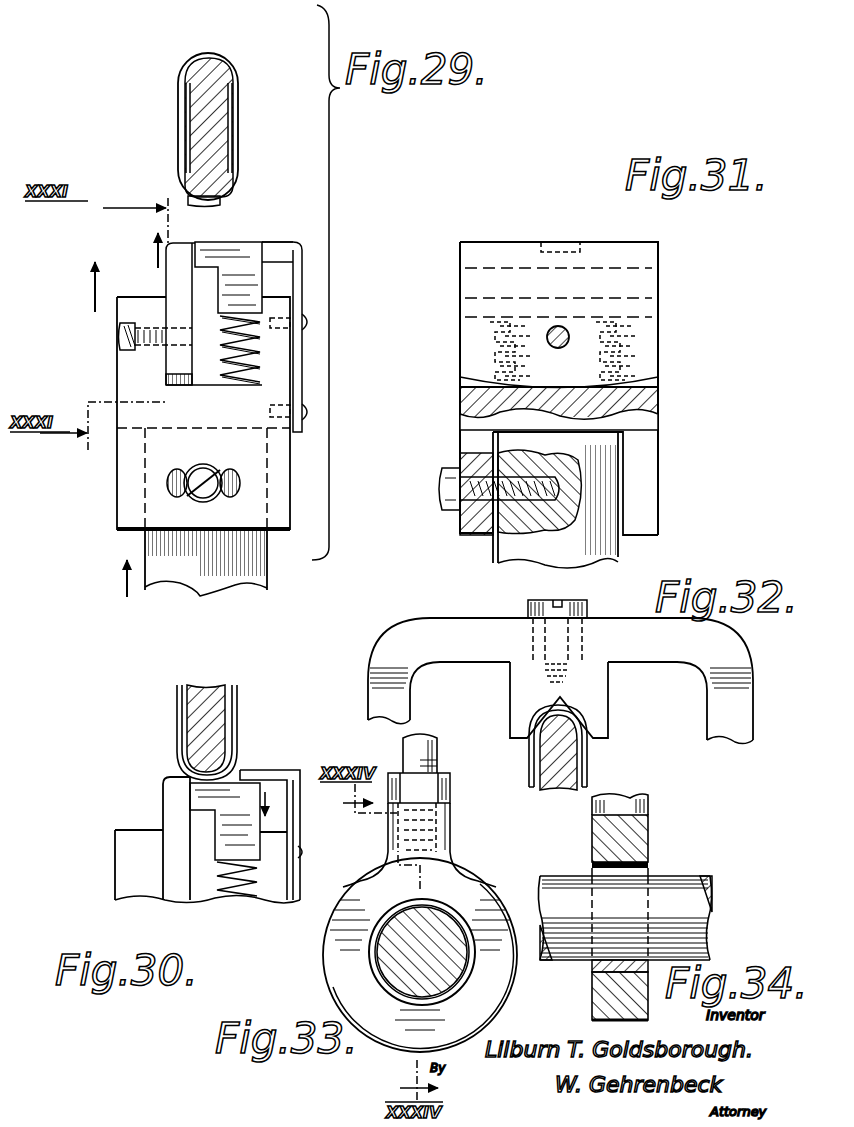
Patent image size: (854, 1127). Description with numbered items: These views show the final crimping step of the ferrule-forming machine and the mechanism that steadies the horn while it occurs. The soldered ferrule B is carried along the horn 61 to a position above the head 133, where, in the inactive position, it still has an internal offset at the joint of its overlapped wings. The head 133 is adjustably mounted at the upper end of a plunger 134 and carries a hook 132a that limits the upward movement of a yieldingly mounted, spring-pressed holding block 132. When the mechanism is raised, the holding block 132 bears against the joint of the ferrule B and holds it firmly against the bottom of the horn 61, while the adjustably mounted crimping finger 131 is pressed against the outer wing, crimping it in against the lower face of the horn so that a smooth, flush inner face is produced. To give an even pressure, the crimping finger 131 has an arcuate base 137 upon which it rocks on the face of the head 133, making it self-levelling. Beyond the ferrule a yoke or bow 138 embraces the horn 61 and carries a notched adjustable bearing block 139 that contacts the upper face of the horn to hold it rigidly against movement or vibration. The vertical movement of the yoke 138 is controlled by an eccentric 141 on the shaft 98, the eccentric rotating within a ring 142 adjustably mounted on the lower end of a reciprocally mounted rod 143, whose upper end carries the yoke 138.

In FIG. 29, the ferrule B is at (179, 125).
In FIG. 32, the ferrule B is at (528, 773).
In FIG. 30, the ferrule B is at (177, 732).
In FIG. 29, the horn 61 is at (205, 128).
In FIG. 32, the horn 61 is at (557, 762).
In FIG. 30, the horn 61 is at (205, 722).
In FIG. 33, the shaft 98 is at (396, 948).
In FIG. 34, the shaft 98 is at (625, 918).
In FIG. 29, the crimping finger 131 is at (165, 277).
In FIG. 31, the crimping finger 131 is at (559, 328).
In FIG. 30, the crimping finger 131 is at (162, 796).
In FIG. 29, the holding block 132 is at (250, 282).
In FIG. 30, the holding block 132 is at (250, 835).
In FIG. 29, the hook 132a is at (284, 240).
In FIG. 30, the hook 132a is at (279, 778).
In FIG. 29, the head 133 is at (212, 413).
In FIG. 31, the head 133 is at (472, 434).
In FIG. 30, the head 133 is at (128, 880).
In FIG. 29, the plunger 134 is at (250, 580).
In FIG. 31, the plunger 134 is at (597, 545).
In FIG. 31, the arcuate base 137 is at (563, 354).
In FIG. 32, the yoke 138 is at (560, 681).
In FIG. 32, the bearing block 139 is at (592, 704).
In FIG. 33, the eccentric 141 is at (456, 986).
In FIG. 34, the eccentric 141 is at (594, 968).
In FIG. 33, the ring 142 is at (420, 927).
In FIG. 34, the ring 142 is at (632, 843).
In FIG. 33, the rod 143 is at (432, 752).